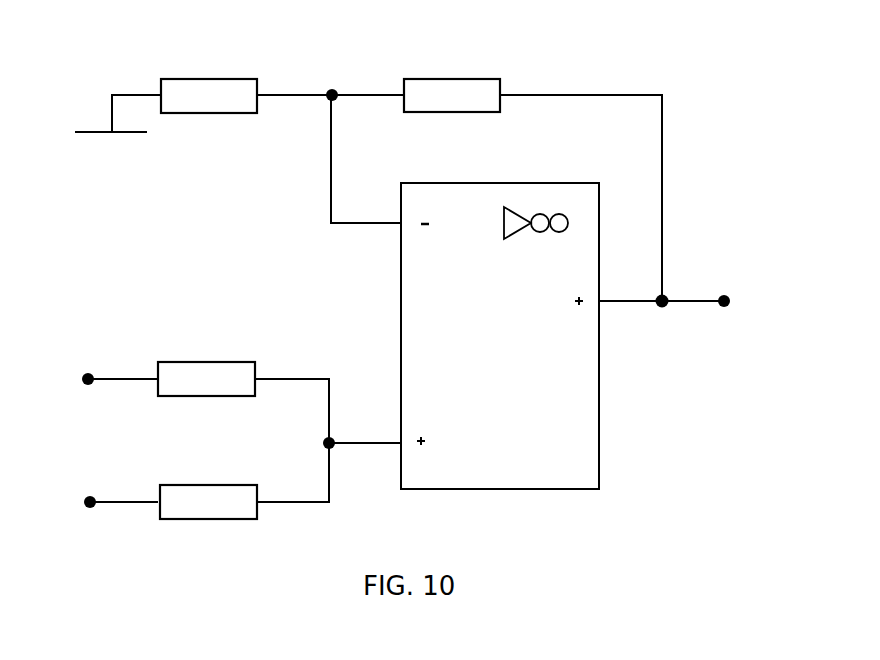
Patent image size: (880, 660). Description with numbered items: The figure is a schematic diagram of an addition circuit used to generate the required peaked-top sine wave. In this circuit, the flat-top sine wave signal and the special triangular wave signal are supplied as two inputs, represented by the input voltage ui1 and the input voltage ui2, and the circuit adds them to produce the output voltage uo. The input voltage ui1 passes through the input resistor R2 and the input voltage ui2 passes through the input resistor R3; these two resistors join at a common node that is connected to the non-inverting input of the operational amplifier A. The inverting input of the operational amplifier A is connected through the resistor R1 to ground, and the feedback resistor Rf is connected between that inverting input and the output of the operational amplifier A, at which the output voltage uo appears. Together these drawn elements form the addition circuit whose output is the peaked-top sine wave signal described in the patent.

The resistor R1 is at (209, 79).
The feedback resistor Rf is at (452, 79).
The input resistor R2 is at (206, 364).
The input resistor R3 is at (208, 488).
The operational amplifier A is at (500, 336).
The first input voltage u_i1 ui1 is at (70, 379).
The second input voltage u_i2 ui2 is at (71, 502).
The output voltage u_o uo is at (736, 301).